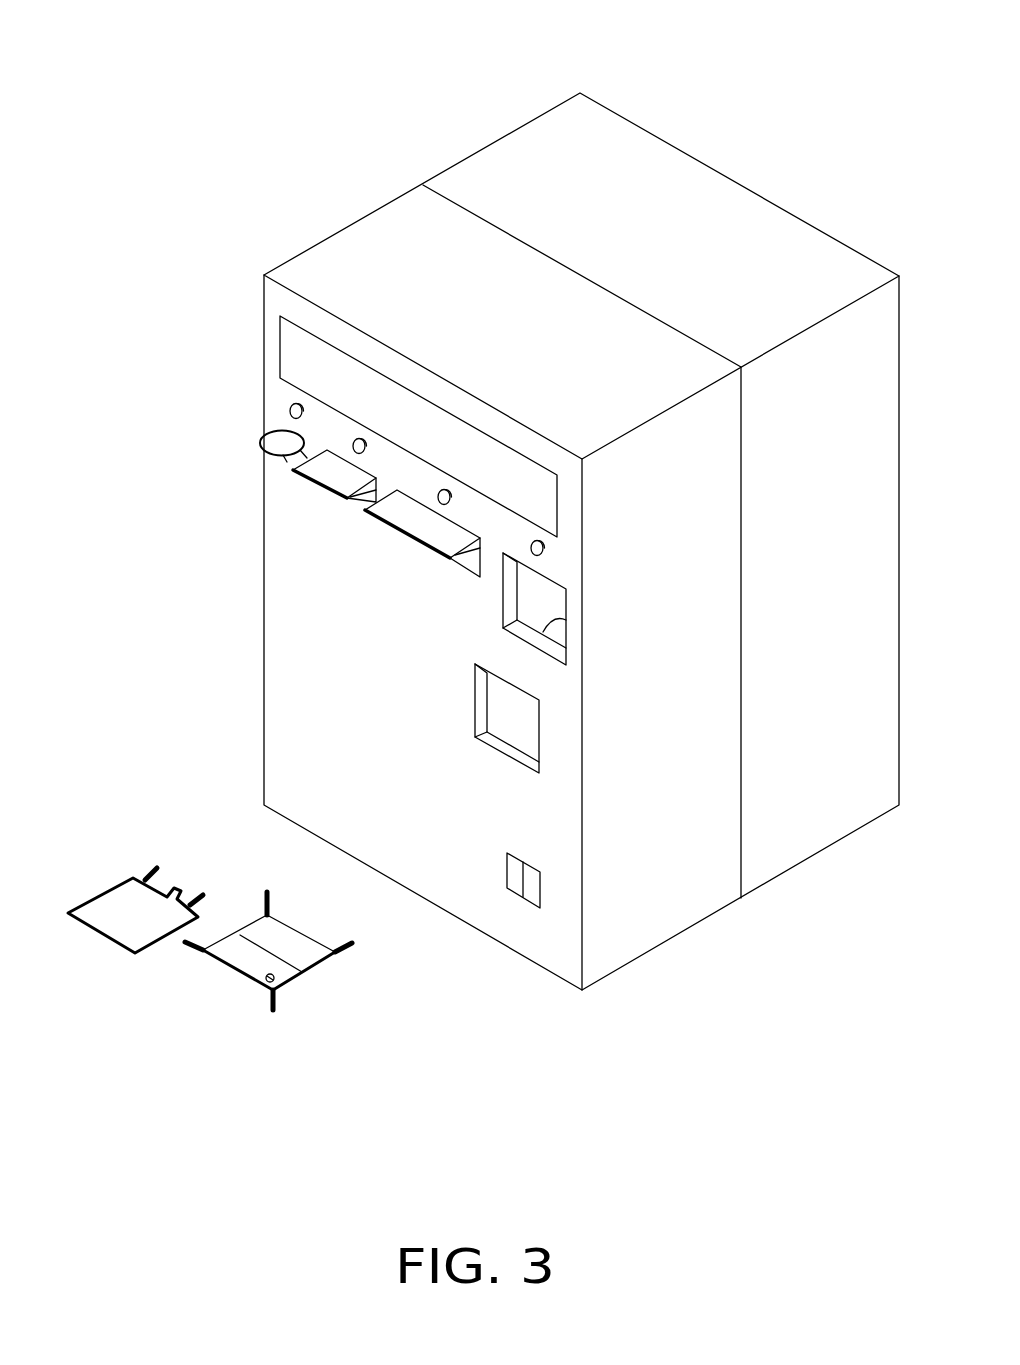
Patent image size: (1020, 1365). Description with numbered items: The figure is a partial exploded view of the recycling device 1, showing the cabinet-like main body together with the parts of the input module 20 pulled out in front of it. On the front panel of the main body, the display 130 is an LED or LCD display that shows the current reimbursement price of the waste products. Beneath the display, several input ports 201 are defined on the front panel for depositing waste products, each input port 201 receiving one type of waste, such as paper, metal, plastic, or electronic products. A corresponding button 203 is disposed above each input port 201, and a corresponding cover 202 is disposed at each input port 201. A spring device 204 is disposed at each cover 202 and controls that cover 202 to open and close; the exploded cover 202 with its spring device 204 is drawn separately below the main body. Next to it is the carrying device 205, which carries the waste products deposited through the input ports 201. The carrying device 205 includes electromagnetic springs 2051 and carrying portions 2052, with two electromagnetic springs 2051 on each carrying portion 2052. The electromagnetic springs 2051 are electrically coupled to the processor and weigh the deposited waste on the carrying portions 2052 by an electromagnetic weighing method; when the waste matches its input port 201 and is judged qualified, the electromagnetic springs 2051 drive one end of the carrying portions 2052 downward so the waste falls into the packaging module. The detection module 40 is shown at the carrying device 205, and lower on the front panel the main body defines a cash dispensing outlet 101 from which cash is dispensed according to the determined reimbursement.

The recycling device 1 is at (330, 43).
The input module 20 is at (135, 822).
The detection module 40 is at (265, 980).
The cash dispensing outlet 101 is at (533, 883).
The display 130 is at (303, 350).
The input port 201 is at (291, 463).
The cover 202 is at (272, 443).
The button 203 is at (287, 411).
The spring device 204 is at (153, 870).
The carrying device 205 is at (313, 987).
The electromagnetic spring 2051 is at (273, 1003).
The carrying portion 2052 is at (280, 933).